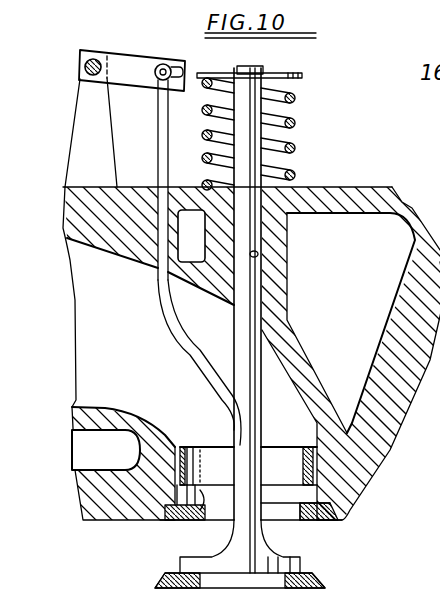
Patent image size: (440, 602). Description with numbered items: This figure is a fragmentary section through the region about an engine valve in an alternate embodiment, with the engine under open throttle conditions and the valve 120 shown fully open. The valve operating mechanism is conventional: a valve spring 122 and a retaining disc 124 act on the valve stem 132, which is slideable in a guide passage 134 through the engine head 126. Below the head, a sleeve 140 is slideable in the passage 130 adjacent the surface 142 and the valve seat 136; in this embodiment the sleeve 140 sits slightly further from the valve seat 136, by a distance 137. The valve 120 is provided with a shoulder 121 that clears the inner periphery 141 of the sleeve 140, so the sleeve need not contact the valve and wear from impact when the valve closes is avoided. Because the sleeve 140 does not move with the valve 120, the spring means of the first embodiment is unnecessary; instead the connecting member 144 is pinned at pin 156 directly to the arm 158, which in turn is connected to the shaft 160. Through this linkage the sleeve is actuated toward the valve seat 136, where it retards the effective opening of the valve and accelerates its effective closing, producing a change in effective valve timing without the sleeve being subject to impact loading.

The valve 120 is at (252, 596).
The shoulder 121 is at (300, 570).
The valve spring 122 is at (296, 124).
The retaining disc 124 is at (302, 76).
The engine head 126 is at (378, 452).
The passage 130 is at (147, 348).
The valve stem 132 is at (240, 348).
The guide passage 134 is at (258, 255).
The valve seat 136 is at (170, 512).
The distance 137 is at (205, 495).
The sleeve 140 is at (181, 445).
The inner periphery 141 is at (310, 450).
The surface 142 is at (310, 512).
The connecting member 144 is at (164, 112).
The pin 156 is at (170, 66).
The arm 158 is at (128, 63).
The shaft 160 is at (85, 67).